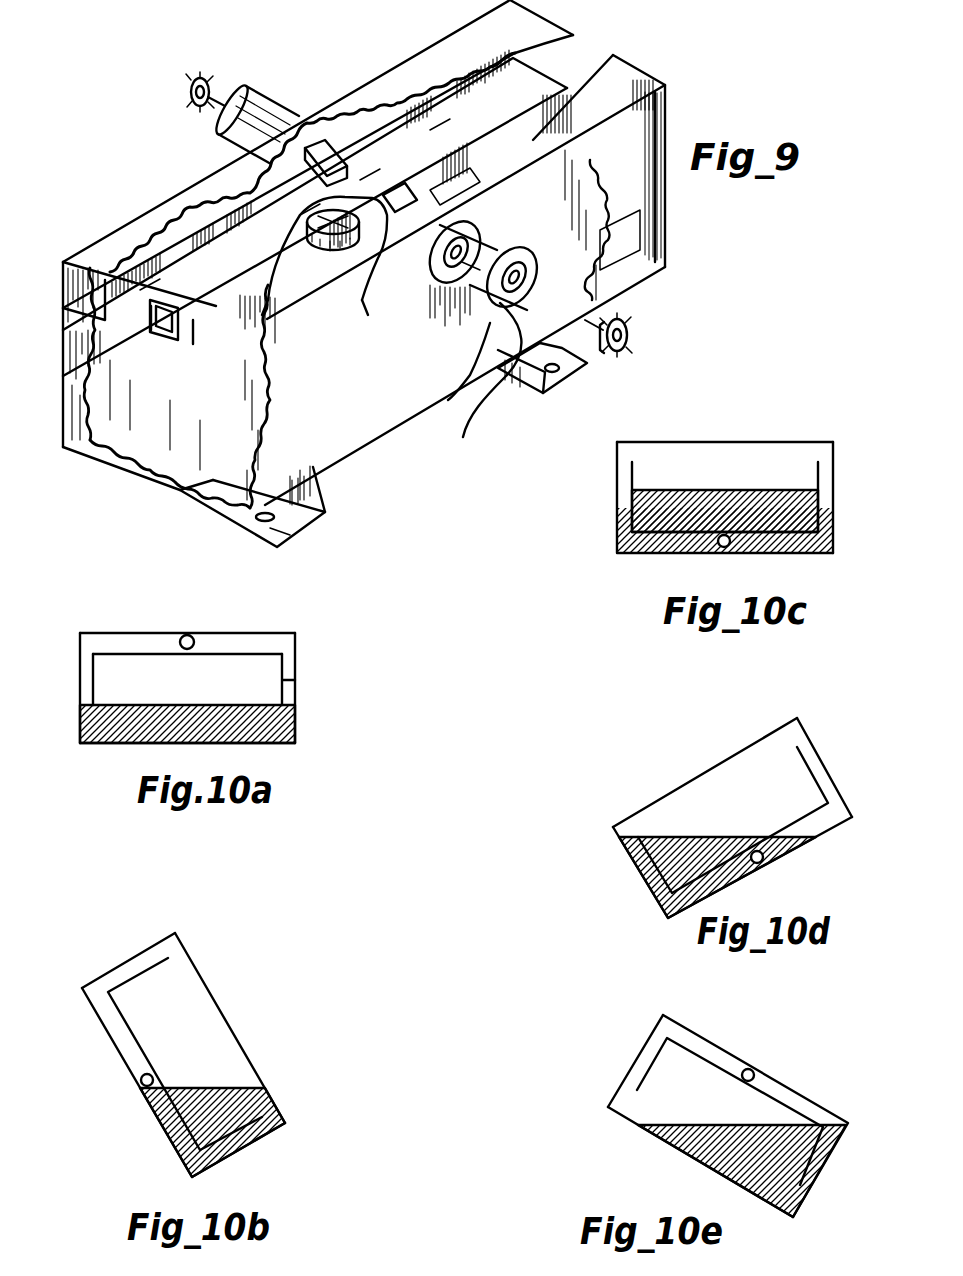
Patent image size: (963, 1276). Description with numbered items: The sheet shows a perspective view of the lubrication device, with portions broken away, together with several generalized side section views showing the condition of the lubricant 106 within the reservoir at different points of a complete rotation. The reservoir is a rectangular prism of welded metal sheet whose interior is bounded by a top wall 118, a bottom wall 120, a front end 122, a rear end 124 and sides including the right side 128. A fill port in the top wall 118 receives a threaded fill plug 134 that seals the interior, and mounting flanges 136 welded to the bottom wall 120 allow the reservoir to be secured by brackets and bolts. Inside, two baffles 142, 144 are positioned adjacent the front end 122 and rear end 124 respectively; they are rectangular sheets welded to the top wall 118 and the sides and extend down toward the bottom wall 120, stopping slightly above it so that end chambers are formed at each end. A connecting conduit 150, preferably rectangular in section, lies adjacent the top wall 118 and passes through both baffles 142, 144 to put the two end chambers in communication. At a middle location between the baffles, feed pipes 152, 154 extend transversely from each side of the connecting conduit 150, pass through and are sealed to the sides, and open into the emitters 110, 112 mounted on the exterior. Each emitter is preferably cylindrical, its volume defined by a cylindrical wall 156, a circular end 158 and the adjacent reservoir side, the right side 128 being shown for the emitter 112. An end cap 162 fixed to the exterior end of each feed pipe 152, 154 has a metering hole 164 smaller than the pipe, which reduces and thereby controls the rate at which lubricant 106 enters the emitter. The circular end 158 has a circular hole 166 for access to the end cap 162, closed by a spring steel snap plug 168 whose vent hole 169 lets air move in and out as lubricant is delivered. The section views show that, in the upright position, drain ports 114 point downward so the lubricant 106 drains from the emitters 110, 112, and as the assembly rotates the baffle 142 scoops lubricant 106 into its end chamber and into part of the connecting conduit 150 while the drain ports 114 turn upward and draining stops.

In FIG. 10A, the lubricant 106 is at (223, 720).
In FIG. 10B, the lubricant 106 is at (200, 1130).
In FIG. 10C, the lubricant 106 is at (677, 513).
In FIG. 10D, the lubricant 106 is at (667, 913).
In FIG. 10E, the lubricant 106 is at (727, 1143).
In FIG. 9, the emitter 110 is at (431, 185).
In FIG. 9, the emitter 112 is at (484, 378).
In FIG. 10A, the emitter 112 is at (180, 633).
In FIG. 10B, the emitter 112 is at (140, 1085).
In FIG. 10C, the emitter 112 is at (730, 547).
In FIG. 10D, the emitter 112 is at (760, 860).
In FIG. 10E, the emitter 112 is at (753, 1073).
In FIG. 9, the drain ports 114 is at (475, 295).
In FIG. 9, the top wall 118 is at (640, 73).
In FIG. 10A, the top wall 118 is at (120, 632).
In FIG. 10B, the top wall 118 is at (103, 1028).
In FIG. 10C, the top wall 118 is at (657, 553).
In FIG. 10D, the top wall 118 is at (817, 833).
In FIG. 10E, the top wall 118 is at (773, 1020).
In FIG. 10A, the bottom wall 120 is at (293, 743).
In FIG. 10B, the bottom wall 120 is at (220, 1007).
In FIG. 10C, the bottom wall 120 is at (705, 442).
In FIG. 10D, the bottom wall 120 is at (680, 783).
In FIG. 10E, the bottom wall 120 is at (627, 1113).
In FIG. 9, the front end 122 is at (670, 222).
In FIG. 10A, the front end 122 is at (297, 647).
In FIG. 10B, the front end 122 is at (133, 953).
In FIG. 10C, the front end 122 is at (617, 477).
In FIG. 10D, the front end 122 is at (650, 867).
In FIG. 10E, the front end 122 is at (810, 1200).
In FIG. 9, the rear end 124 is at (63, 270).
In FIG. 10A, the rear end 124 is at (80, 730).
In FIG. 10B, the rear end 124 is at (260, 1150).
In FIG. 10C, the rear end 124 is at (833, 458).
In FIG. 10D, the rear end 124 is at (823, 700).
In FIG. 10E, the rear end 124 is at (630, 1063).
In FIG. 9, the right side 128 is at (313, 453).
In FIG. 9, the fill plug 134 is at (313, 300).
In FIG. 9, the mounting flanges 136 is at (253, 540).
In FIG. 9, the baffle 142 is at (578, 175).
In FIG. 10A, the baffle 142 is at (297, 680).
In FIG. 9, the baffle 144 is at (157, 410).
In FIG. 10A, the baffle 144 is at (93, 690).
In FIG. 9, the connecting conduit 150 is at (207, 263).
In FIG. 10A, the connecting conduit 150 is at (248, 643).
In FIG. 9, the feed pipe 152 is at (300, 162).
In FIG. 9, the feed pipe 154 is at (450, 180).
In FIG. 9, the cylindrical wall 156 is at (247, 87).
In FIG. 9, the circular end 158 is at (508, 367).
In FIG. 9, the end cap 162 is at (433, 257).
In FIG. 9, the metering hole 164 is at (460, 278).
In FIG. 9, the circular hole 166 is at (535, 270).
In FIG. 9, the snap plug 168 is at (195, 72).
In FIG. 9, the vent hole 169 is at (637, 347).